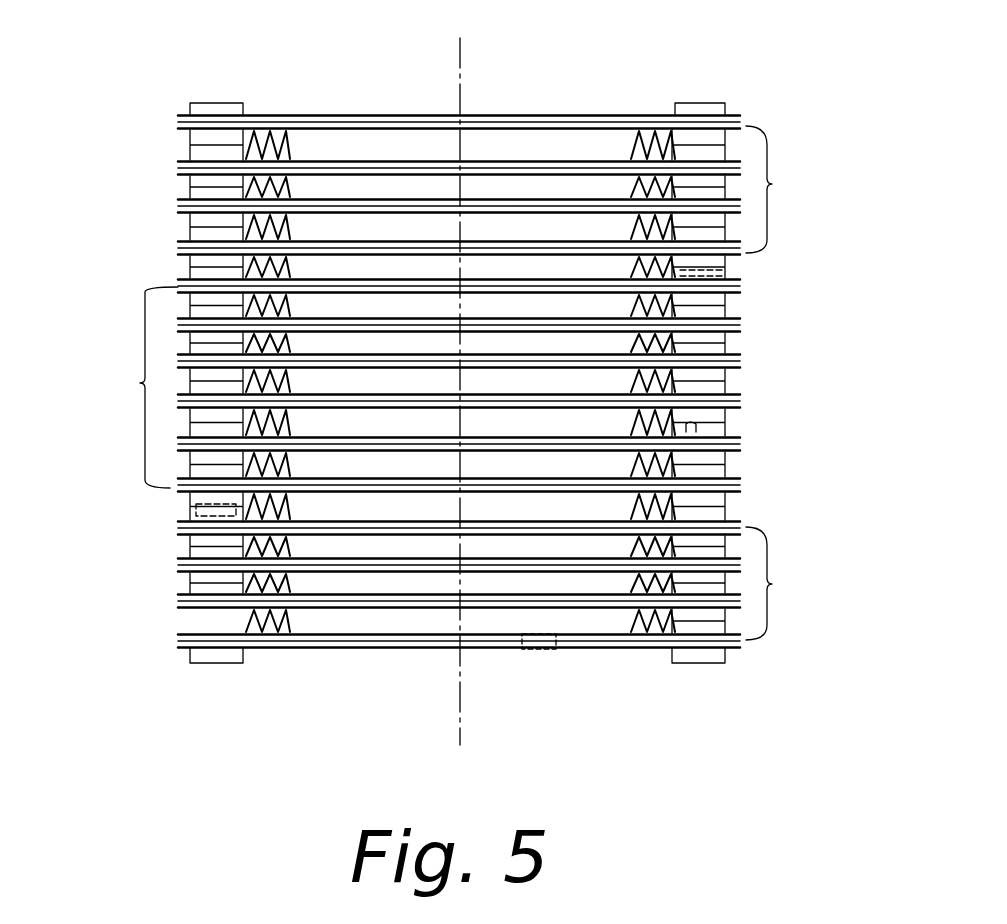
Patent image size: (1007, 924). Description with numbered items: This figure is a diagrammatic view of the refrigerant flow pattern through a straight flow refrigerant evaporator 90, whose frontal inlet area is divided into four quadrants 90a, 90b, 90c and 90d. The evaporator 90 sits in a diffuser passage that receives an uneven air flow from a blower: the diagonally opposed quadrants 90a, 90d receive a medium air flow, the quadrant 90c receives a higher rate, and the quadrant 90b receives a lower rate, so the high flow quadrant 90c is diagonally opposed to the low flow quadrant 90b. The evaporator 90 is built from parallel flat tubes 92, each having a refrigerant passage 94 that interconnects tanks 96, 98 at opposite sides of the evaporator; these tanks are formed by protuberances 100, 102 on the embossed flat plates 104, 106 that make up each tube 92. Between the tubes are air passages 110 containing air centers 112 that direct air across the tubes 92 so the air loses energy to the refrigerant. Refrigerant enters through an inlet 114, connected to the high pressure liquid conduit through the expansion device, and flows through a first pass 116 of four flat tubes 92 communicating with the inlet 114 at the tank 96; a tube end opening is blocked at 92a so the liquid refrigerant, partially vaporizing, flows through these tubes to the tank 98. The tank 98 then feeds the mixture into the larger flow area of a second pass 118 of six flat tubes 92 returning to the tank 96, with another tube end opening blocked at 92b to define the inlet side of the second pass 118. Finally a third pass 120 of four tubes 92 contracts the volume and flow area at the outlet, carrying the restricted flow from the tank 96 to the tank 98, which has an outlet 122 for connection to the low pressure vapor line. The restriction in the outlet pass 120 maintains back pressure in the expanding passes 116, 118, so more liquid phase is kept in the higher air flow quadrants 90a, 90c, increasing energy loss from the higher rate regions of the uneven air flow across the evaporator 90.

The straight flow refrigerant evaporator 90 is at (675, 90).
The quadrant 90a is at (360, 188).
The quadrant 90b is at (515, 188).
The quadrant 90c is at (322, 442).
The quadrant 90d is at (572, 465).
The flat tube 92 is at (728, 240).
The blocked end opening 92a is at (192, 508).
The blocked end opening 92b is at (727, 273).
The refrigerant passage 94 is at (536, 652).
The tank 96 is at (190, 583).
The tank 98 is at (728, 508).
The protuberance 100 is at (196, 542).
The protuberance 102 is at (284, 548).
The embossed flat plate 104 is at (200, 508).
The embossed flat plate 106 is at (188, 557).
The air passage 110 is at (300, 268).
The air center 112 is at (178, 290).
The inlet 114 is at (195, 658).
The first pass 116 is at (772, 584).
The second pass 118 is at (140, 383).
The third pass 120 is at (772, 184).
The outlet 122 is at (713, 108).